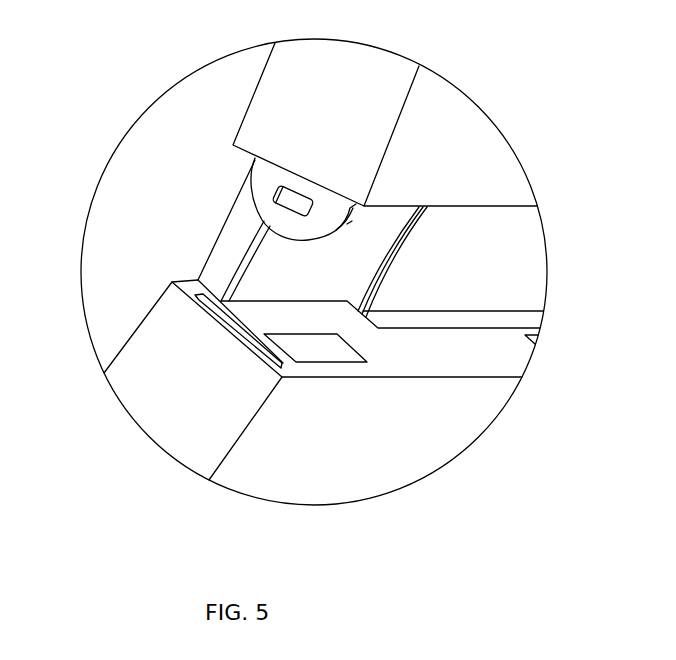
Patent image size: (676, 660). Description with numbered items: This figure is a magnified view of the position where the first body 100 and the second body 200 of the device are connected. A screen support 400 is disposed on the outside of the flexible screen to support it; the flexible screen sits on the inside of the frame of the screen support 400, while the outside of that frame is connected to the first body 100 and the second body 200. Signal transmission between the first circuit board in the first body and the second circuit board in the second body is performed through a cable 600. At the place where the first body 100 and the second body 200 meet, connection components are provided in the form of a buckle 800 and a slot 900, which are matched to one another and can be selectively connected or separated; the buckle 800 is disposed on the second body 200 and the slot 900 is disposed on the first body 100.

The first body 100 is at (145, 403).
The second body 200 is at (448, 140).
The screen support 400 is at (234, 257).
The cable 600 is at (505, 270).
The buckle 800 is at (267, 206).
The slot 900 is at (253, 340).